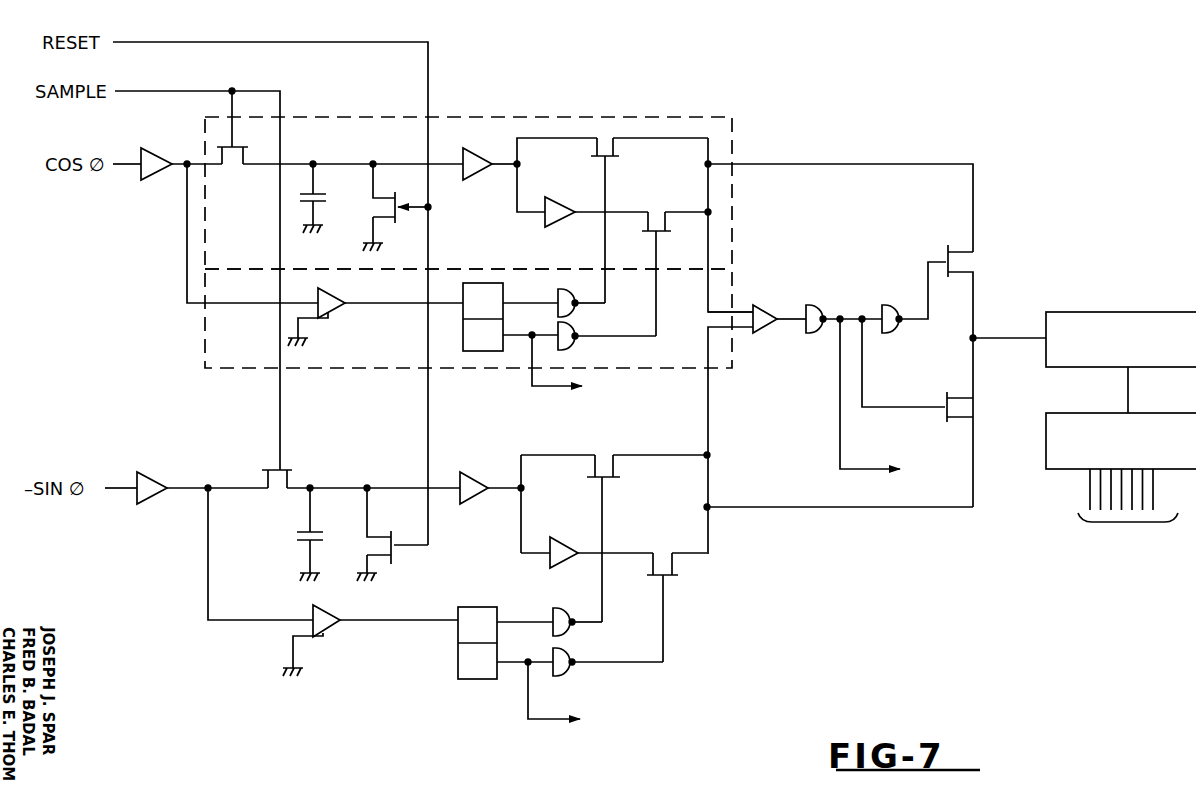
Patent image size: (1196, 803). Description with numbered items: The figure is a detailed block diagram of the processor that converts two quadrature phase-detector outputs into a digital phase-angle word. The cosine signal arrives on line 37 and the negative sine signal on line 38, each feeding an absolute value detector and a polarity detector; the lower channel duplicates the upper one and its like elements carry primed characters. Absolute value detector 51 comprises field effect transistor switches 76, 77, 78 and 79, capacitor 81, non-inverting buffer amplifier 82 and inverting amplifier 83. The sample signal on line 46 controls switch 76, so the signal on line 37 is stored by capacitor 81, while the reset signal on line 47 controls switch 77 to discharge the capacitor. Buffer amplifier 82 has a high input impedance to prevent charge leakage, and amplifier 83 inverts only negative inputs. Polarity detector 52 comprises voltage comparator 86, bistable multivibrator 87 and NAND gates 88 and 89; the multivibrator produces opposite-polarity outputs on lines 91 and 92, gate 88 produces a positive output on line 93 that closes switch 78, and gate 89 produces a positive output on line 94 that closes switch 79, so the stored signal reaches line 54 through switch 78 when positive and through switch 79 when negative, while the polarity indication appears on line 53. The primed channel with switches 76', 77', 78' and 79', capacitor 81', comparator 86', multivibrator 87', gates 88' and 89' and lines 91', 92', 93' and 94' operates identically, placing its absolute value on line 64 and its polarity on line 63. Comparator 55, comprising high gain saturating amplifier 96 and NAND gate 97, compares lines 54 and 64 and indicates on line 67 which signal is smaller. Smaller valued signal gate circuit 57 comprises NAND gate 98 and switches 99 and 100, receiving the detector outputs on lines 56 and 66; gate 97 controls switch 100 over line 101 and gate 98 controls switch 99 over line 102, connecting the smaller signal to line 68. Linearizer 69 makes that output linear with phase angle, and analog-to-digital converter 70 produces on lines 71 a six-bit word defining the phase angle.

The line 37 is at (118, 166).
The line 38 is at (127, 486).
The line 46 is at (172, 91).
The line 47 is at (200, 42).
The absolute value detector 51 is at (519, 113).
The polarity detector 52 is at (204, 338).
The line 53 is at (552, 392).
The line 54 is at (705, 300).
The comparator 55 is at (772, 197).
The line 56 is at (973, 188).
The smaller valued signal gate circuit 57 is at (868, 197).
The line 63 is at (553, 722).
The line 64 is at (708, 411).
The line 66 is at (862, 508).
The line 67 is at (840, 430).
The line 68 is at (1005, 339).
The linearizer 69 is at (1112, 312).
The analog-to-digital converter 70 is at (1065, 470).
The lines 71 is at (1128, 522).
The field effect transistor switch 76 is at (340, 149).
The field effect transistor switch 77 is at (397, 191).
The field effect transistor switch 78 is at (649, 119).
The field effect transistor switch 79 is at (675, 204).
The capacitor 81 is at (279, 198).
The non-inverting buffer amplifier 82 is at (478, 180).
The inverting amplifier 83 is at (570, 200).
The voltage comparator 86 is at (375, 324).
The bistable multivibrator 87 is at (447, 317).
The NAND gate 88 is at (575, 280).
The NAND gate 89 is at (607, 327).
The line 91 is at (530, 289).
The line 92 is at (518, 363).
The line 93 is at (632, 228).
The line 94 is at (676, 283).
The non-inverting high gain saturating voltage amplifier 96 is at (764, 304).
The NAND gate 97 is at (814, 304).
The NAND gate 98 is at (888, 304).
The field effect transistor switch 99 is at (965, 264).
The field effect transistor switch 100 is at (960, 396).
The line 101 is at (920, 410).
The line 102 is at (928, 259).
The field effect transistor switch 76' is at (338, 457).
The field effect transistor switch 77' is at (376, 534).
The field effect transistor switch 78' is at (648, 449).
The field effect transistor switch 79' is at (692, 578).
The capacitor 81' is at (287, 534).
The voltage comparator 86' is at (370, 655).
The bistable multivibrator 87' is at (447, 643).
The NAND gate 88' is at (594, 632).
The NAND gate 89' is at (608, 676).
The line 91' is at (525, 599).
The line 92' is at (515, 691).
The line 93' is at (629, 549).
The line 94' is at (694, 626).